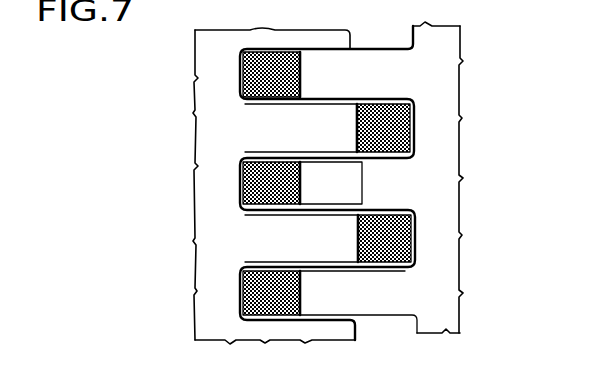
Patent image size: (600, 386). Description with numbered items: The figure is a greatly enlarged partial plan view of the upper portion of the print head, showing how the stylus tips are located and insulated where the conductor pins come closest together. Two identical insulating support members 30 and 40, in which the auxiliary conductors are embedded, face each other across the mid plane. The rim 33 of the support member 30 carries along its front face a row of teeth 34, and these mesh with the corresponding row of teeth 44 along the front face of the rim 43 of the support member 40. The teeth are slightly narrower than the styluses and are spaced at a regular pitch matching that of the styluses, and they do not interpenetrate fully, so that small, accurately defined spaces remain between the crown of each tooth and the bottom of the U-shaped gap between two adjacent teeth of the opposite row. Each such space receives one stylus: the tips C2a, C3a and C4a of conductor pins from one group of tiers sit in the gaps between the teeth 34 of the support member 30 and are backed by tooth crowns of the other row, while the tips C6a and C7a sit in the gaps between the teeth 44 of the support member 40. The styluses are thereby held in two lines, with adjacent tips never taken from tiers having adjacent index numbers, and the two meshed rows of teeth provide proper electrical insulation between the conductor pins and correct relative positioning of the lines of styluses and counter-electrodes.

The tip of conductor pin C2 C2a is at (254, 82).
The tip of conductor pin C3 C3a is at (263, 190).
The tip of conductor pin C4 C4a is at (262, 296).
The tip of conductor pin C6 C6a is at (393, 122).
The tip of conductor pin C7 C7a is at (400, 232).
The insulating support member 30 is at (195, 319).
The rim 33 is at (227, 236).
The row of teeth 34 is at (315, 246).
The insulating support member 40 is at (463, 306).
The rim 43 is at (433, 267).
The row of teeth 44 is at (372, 290).